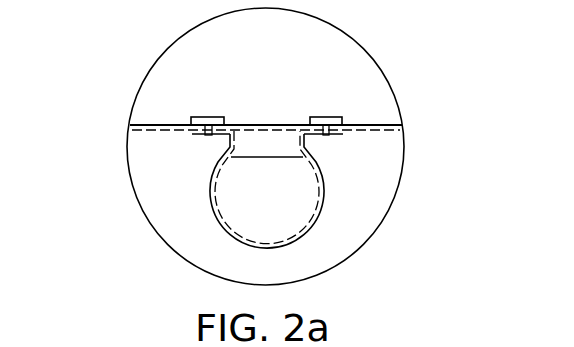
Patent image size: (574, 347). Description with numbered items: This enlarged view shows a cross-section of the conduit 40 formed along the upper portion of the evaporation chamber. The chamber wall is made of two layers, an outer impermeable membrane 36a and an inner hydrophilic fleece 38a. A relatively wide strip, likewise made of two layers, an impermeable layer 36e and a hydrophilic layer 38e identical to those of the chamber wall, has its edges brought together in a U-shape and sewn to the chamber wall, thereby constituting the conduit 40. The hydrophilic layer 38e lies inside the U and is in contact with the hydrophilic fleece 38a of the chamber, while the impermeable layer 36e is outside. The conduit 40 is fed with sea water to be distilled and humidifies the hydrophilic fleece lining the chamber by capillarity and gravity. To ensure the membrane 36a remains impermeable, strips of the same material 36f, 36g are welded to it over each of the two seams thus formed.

The impermeable membrane 36a is at (368, 123).
The hydrophilic fleece 38a is at (172, 130).
The strip of impermeable material 36f is at (213, 117).
The strip of impermeable material 36g is at (329, 117).
The impermeable layer 36e is at (210, 213).
The hydrophilic layer 38e is at (305, 220).
The conduit 40 is at (287, 209).